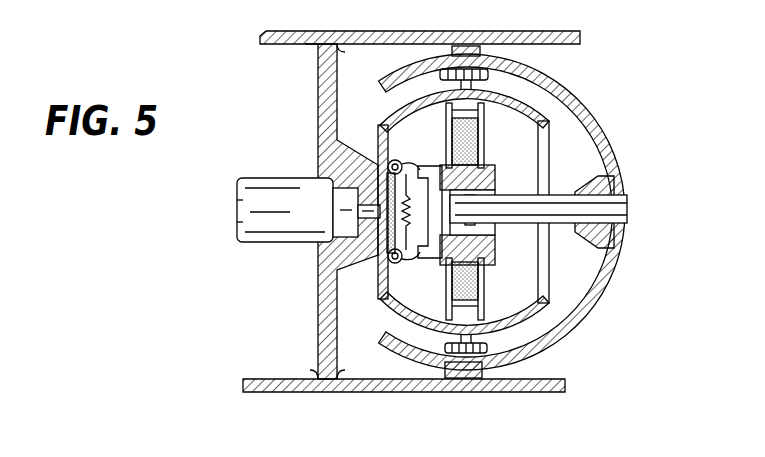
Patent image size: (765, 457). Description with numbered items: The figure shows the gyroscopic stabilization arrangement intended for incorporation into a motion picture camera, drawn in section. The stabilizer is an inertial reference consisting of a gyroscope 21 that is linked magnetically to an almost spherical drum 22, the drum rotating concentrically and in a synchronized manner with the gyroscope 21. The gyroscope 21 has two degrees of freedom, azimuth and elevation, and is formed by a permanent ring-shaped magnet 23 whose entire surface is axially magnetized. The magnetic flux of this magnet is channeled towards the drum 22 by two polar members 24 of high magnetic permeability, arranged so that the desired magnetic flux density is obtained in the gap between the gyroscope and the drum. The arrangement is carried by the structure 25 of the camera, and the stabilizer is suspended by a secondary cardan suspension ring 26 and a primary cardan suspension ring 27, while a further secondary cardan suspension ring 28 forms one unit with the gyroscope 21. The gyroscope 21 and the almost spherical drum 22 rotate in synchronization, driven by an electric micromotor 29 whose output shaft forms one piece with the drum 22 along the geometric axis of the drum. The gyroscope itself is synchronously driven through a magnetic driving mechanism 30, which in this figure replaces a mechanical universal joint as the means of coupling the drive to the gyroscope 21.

The gyroscope 21 is at (460, 303).
The almost spherical drum 22 is at (540, 308).
The permanent ring-shaped magnet 23 is at (482, 129).
The polar member 24 is at (487, 143).
The structure of the camera 25 is at (527, 31).
The secondary cardan suspension ring 26 is at (560, 347).
The primary cardan suspension ring 27 is at (447, 353).
The secondary cardan suspension ring 28 is at (618, 208).
The electric micromotor 29 is at (265, 178).
The magnetic driving mechanism 30 is at (417, 163).